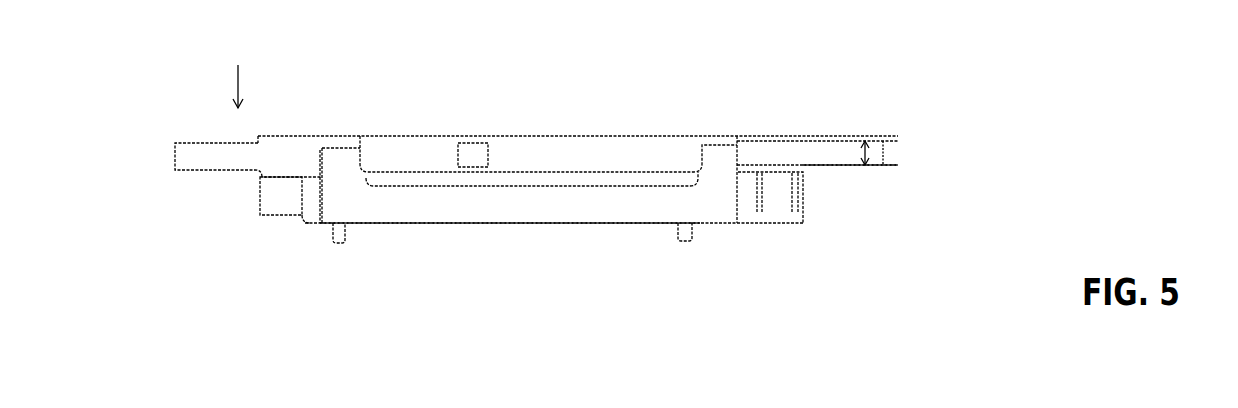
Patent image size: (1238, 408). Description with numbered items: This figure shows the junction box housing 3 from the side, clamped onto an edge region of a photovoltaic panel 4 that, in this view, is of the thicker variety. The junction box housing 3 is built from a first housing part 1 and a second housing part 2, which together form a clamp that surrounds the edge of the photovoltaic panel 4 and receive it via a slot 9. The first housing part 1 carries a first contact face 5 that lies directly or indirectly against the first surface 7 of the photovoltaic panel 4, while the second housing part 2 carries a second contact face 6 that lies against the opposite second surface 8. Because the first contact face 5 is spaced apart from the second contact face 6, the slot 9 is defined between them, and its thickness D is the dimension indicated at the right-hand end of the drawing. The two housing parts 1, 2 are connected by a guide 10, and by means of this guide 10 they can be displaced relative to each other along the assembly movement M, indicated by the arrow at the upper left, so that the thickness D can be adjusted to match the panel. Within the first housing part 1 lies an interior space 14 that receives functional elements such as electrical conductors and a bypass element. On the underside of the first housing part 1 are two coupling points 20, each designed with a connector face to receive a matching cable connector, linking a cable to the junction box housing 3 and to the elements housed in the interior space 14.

The first housing part 1 is at (613, 207).
The second housing part 2 is at (660, 152).
The junction box housing 3 is at (473, 205).
The photovoltaic panel 4 is at (192, 158).
The first contact face 5 is at (768, 167).
The second contact face 6 is at (770, 136).
The first surface 7 is at (827, 165).
The second surface 8 is at (833, 141).
The slot 9 is at (293, 158).
The guide 10 is at (362, 157).
The interior space 14 is at (417, 205).
The coupling point 20 is at (265, 193).
The thickness of the slot D is at (868, 153).
The assembly movement M is at (238, 82).